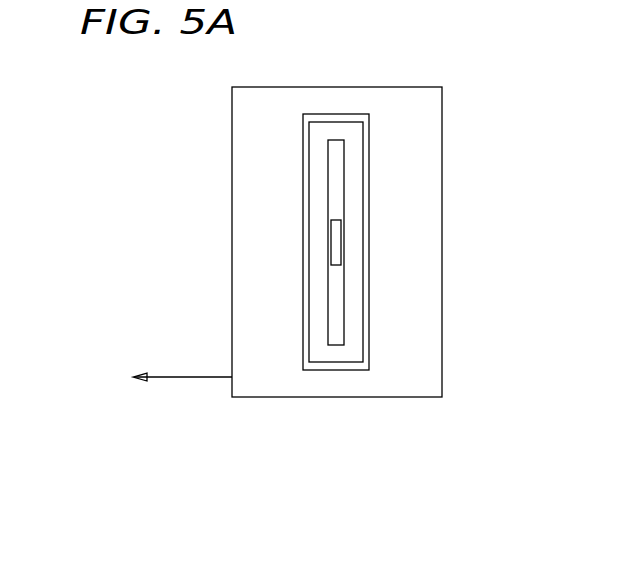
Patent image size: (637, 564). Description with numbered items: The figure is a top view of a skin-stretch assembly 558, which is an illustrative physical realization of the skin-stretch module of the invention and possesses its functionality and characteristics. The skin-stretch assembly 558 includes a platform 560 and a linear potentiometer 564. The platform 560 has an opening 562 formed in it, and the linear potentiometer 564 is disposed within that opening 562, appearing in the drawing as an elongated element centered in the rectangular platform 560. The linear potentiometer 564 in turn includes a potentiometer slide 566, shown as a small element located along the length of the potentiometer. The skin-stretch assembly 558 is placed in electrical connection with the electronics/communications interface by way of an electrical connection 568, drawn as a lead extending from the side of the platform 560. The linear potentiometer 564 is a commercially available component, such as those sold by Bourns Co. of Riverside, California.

The skin-stretch assembly 558 is at (146, 150).
The platform 560 is at (430, 150).
The opening 562 is at (303, 126).
The linear potentiometer 564 is at (318, 328).
The potentiometer slide 566 is at (335, 241).
The electrical connection 568 is at (182, 375).